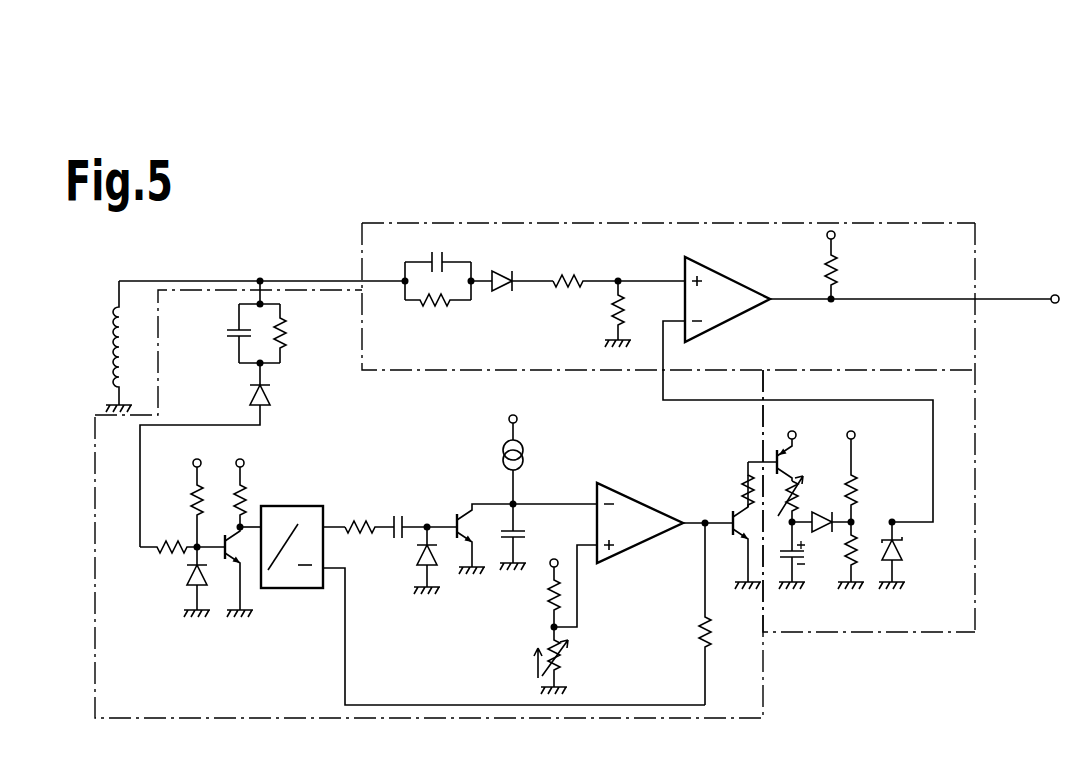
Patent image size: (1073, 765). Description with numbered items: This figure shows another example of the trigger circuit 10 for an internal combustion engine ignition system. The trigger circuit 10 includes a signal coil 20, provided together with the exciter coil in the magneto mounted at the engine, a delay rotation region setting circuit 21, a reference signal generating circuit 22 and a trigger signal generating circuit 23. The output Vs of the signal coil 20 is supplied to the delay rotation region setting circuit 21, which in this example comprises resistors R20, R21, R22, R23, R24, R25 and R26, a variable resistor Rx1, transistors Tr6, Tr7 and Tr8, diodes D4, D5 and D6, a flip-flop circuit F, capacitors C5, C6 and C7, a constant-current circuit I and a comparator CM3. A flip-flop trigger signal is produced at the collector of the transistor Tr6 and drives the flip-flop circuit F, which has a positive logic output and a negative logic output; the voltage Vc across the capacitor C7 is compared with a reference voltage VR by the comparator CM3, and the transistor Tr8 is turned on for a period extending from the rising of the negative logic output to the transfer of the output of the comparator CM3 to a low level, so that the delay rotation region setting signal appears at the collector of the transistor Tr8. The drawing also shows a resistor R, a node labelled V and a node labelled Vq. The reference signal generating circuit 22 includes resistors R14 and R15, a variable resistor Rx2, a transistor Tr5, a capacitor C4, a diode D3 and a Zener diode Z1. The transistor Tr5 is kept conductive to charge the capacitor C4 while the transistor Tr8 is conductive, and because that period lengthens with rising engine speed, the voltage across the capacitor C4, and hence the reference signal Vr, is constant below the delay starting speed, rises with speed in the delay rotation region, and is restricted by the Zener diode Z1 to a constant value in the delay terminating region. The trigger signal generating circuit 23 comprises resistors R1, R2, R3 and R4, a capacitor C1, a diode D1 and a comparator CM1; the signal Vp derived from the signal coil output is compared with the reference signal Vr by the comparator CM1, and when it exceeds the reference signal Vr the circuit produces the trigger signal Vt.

The trigger circuit 10 is at (994, 193).
The signal coil 20 is at (114, 303).
The delay rotation region setting circuit 21 is at (775, 693).
The reference signal generating circuit 22 is at (984, 464).
The trigger signal generating circuit 23 is at (753, 220).
The capacitor C1 is at (440, 258).
The resistor R1 is at (437, 305).
The diode D1 is at (500, 292).
The resistor R2 is at (572, 278).
The resistor R3 is at (614, 311).
The resistor R4 is at (840, 279).
The comparator CM1 is at (738, 293).
The capacitor C5 is at (235, 331).
The resistor R20 is at (287, 339).
The diode D4 is at (271, 397).
The resistor R21 is at (159, 546).
The resistor R22 is at (194, 496).
The resistor R23 is at (246, 490).
The diode D5 is at (190, 576).
The transistor Tr6 is at (233, 556).
The flip-flop circuit F is at (301, 502).
The resistor R24 is at (350, 517).
The capacitor C6 is at (404, 514).
The diode D6 is at (413, 556).
The transistor Tr7 is at (462, 510).
The constant-current circuit I is at (525, 446).
The capacitor C7 is at (521, 533).
The comparator CM3 is at (646, 540).
The resistor R25 is at (552, 588).
The variable resistor Rx1 is at (565, 662).
The resistor R is at (700, 625).
The transistor Tr8 is at (730, 502).
The resistor R26 is at (745, 480).
The transistor Tr5 is at (786, 455).
The variable resistor Rx2 is at (795, 500).
The diode D3 is at (819, 533).
The capacitor C4 is at (786, 560).
The resistor R14 is at (860, 486).
The resistor R15 is at (856, 566).
The Zener diode Z1 is at (905, 547).
The output of signal coil Vs is at (262, 272).
The signal Vp is at (651, 267).
The reference signal Vr is at (791, 412).
The trigger signal Vt is at (1032, 290).
The flip-flop input voltage Vq is at (236, 522).
The voltage across capacitor C7 Vc is at (555, 496).
The supply voltage V is at (761, 509).
The reference voltage VR is at (526, 665).